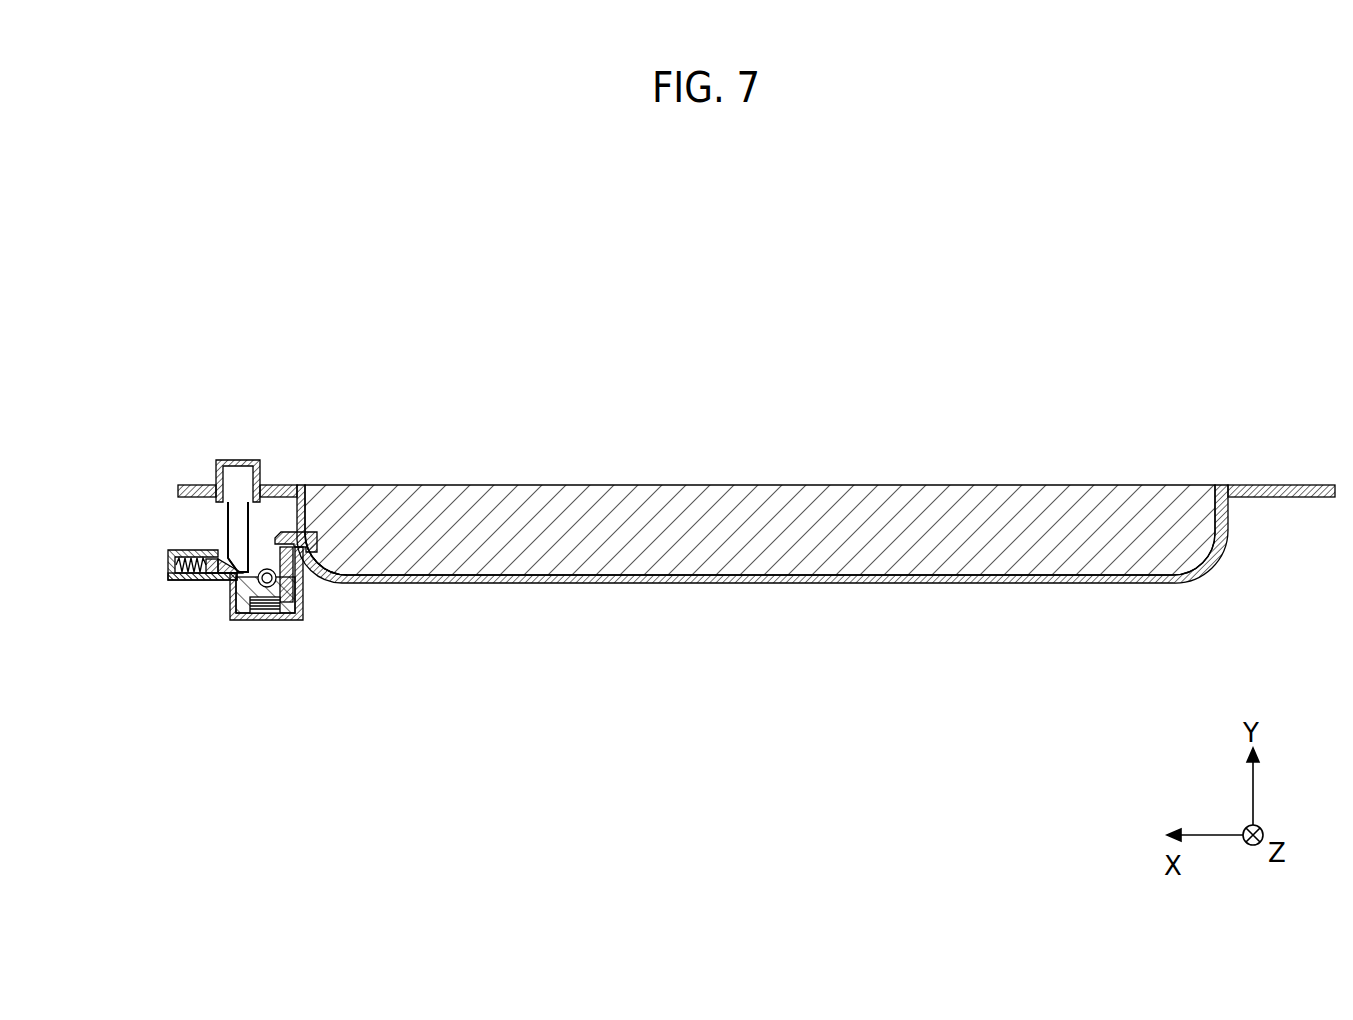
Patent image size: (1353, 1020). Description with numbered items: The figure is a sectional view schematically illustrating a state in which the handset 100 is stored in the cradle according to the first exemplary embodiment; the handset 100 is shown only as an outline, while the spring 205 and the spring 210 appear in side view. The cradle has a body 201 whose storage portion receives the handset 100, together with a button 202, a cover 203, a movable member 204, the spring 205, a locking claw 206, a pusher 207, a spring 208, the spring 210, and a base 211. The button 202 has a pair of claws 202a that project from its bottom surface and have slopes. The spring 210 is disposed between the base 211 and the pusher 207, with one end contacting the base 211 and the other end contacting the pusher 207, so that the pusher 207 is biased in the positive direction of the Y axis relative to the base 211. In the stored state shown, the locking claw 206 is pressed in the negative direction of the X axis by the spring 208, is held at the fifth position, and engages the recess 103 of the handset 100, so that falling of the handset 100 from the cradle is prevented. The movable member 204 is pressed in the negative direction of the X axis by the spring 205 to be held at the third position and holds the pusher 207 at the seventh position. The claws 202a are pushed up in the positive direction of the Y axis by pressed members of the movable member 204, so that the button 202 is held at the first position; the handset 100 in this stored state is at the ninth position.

The handset 100 is at (552, 485).
The recess 103 is at (322, 546).
The body 201 is at (1250, 485).
The button 202 is at (232, 460).
The claws 202a is at (228, 537).
The cover 203 is at (167, 560).
The movable member 204 is at (213, 581).
The spring 205 is at (168, 581).
The locking claw 206 is at (296, 487).
The pusher 207 is at (303, 612).
The spring 208 is at (290, 620).
The spring 210 is at (280, 620).
The base 211 is at (262, 620).